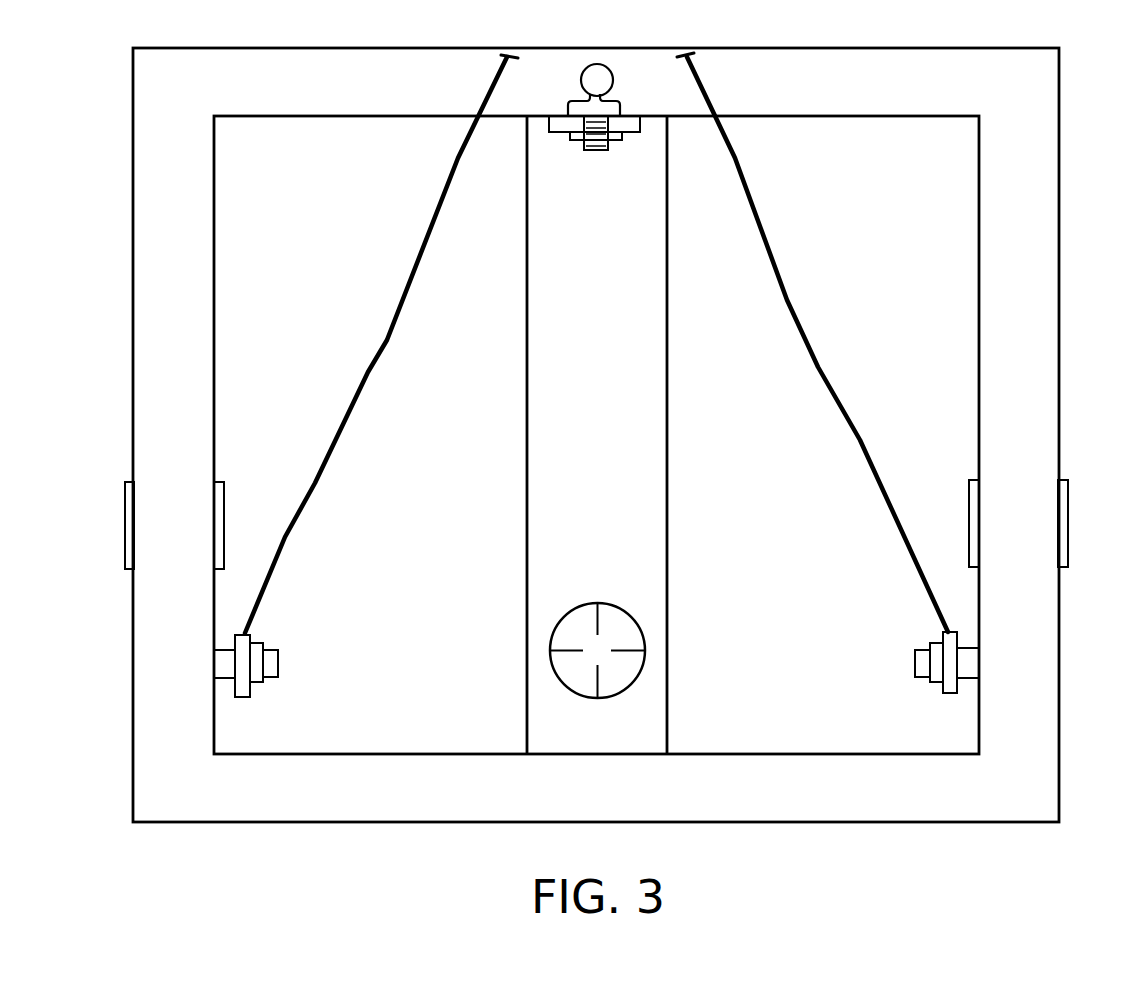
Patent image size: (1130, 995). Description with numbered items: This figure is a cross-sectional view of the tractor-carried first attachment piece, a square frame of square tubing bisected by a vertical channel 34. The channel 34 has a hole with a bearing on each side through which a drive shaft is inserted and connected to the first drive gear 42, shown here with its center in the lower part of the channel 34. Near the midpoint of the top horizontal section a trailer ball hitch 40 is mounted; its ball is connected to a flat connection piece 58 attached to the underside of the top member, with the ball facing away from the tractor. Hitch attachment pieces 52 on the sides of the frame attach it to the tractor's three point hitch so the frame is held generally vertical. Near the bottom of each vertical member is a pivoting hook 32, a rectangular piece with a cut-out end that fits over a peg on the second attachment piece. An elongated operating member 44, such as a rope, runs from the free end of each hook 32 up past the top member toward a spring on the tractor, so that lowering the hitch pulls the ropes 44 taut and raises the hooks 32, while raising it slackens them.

The hook 32 is at (252, 695).
The vertical channel 34 is at (672, 382).
The trailer ball hitch 40 is at (616, 99).
The first drive gear 42 is at (618, 667).
The elongated operating member 44 is at (318, 484).
The hitch attachment piece 52 is at (122, 522).
The connection piece 58 is at (627, 134).